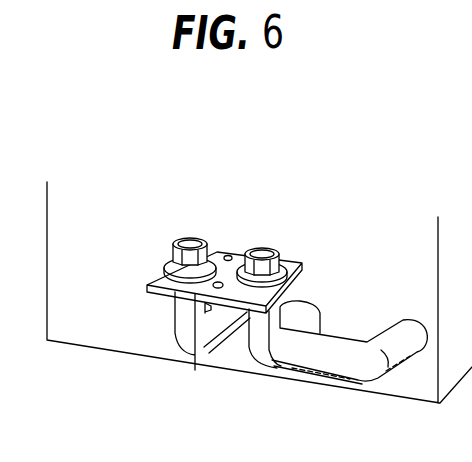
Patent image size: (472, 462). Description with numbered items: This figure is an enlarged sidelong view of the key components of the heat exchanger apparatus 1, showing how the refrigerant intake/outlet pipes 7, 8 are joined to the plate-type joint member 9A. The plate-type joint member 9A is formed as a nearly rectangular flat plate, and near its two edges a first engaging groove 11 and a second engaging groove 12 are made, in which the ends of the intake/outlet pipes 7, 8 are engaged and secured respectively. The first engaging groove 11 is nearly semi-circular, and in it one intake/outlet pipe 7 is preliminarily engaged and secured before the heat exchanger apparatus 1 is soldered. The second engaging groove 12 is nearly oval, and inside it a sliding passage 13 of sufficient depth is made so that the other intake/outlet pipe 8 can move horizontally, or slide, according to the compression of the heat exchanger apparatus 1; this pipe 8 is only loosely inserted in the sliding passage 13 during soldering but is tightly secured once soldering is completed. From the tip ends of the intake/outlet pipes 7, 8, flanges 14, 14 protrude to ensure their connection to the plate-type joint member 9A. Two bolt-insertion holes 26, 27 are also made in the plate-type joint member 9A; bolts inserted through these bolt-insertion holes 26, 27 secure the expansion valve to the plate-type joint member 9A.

The heat exchanger apparatus 1 is at (427, 388).
The refrigerant intake/outlet pipe 7 is at (185, 325).
The refrigerant intake/outlet pipe 8 is at (330, 362).
The plate-type joint member 9A is at (190, 293).
The first engaging groove 11 is at (162, 276).
The second engaging groove 12 is at (260, 278).
The sliding passage 13 is at (237, 265).
The flange 14 is at (165, 247).
The bolt-insertion hole 26 is at (231, 255).
The bolt-insertion hole 27 is at (194, 322).